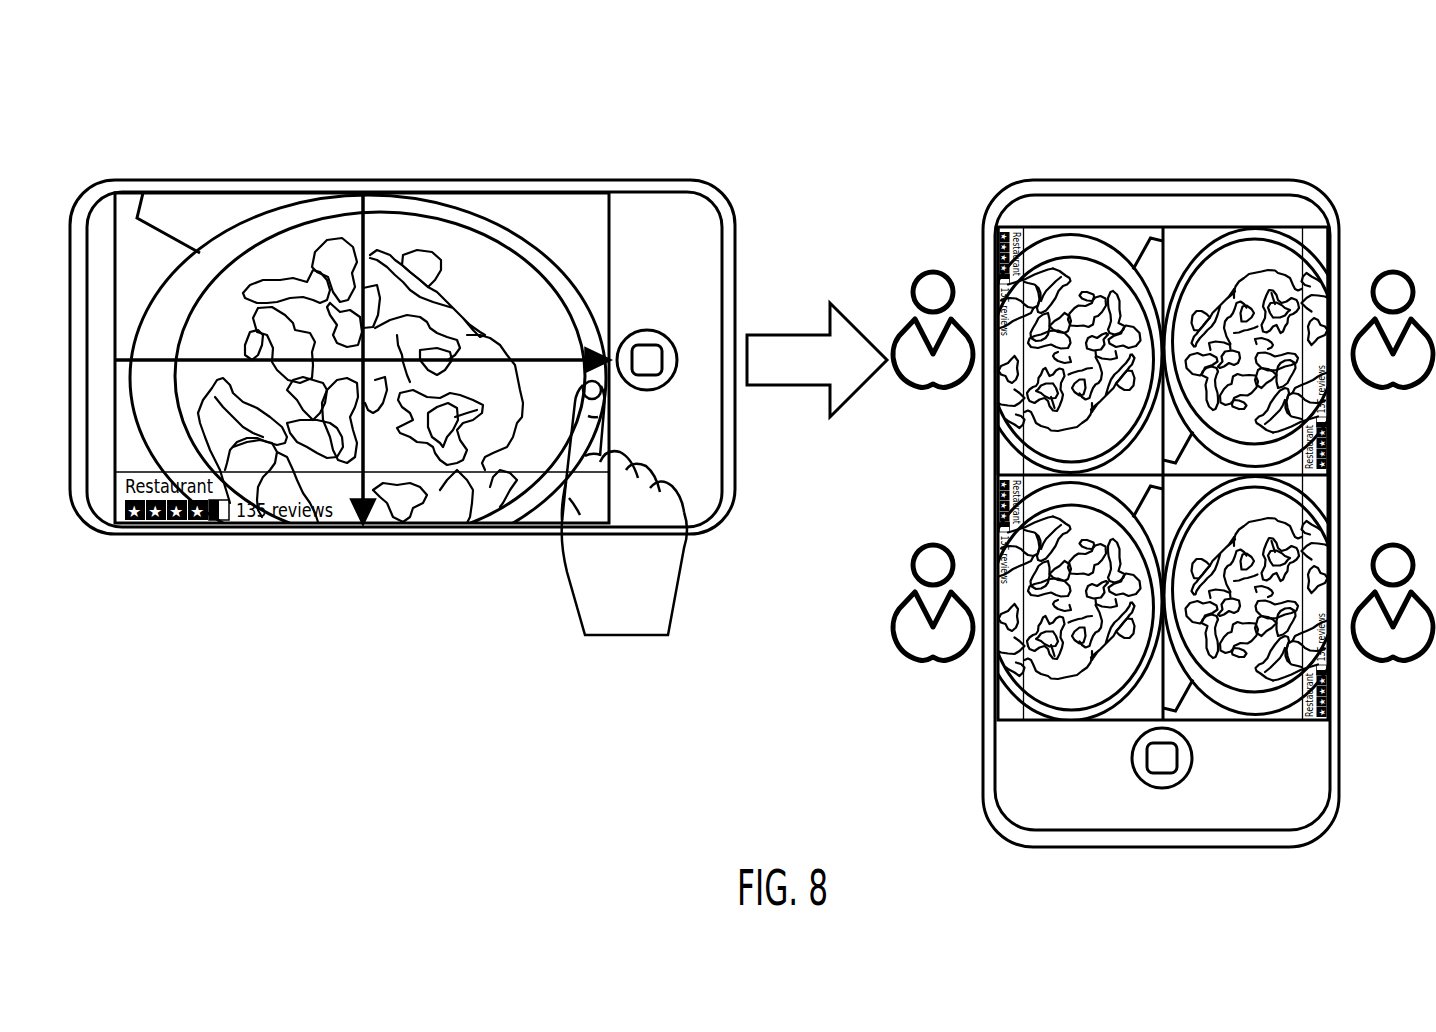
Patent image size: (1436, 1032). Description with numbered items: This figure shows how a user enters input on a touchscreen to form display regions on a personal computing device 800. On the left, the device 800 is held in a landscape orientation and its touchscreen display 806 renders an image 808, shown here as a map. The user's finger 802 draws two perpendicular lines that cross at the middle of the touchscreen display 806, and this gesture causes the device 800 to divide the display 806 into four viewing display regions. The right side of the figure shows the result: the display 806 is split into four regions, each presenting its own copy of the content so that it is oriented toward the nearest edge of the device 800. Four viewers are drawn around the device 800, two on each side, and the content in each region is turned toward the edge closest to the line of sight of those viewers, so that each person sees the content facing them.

The personal computing device 800 is at (131, 180).
The finger 802 is at (597, 433).
The touchscreen display 806 is at (568, 220).
The image 808 is at (492, 220).